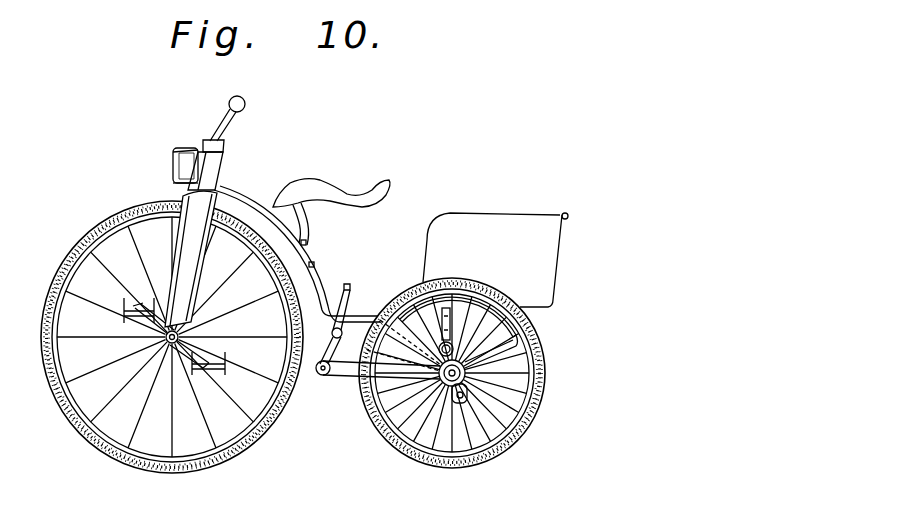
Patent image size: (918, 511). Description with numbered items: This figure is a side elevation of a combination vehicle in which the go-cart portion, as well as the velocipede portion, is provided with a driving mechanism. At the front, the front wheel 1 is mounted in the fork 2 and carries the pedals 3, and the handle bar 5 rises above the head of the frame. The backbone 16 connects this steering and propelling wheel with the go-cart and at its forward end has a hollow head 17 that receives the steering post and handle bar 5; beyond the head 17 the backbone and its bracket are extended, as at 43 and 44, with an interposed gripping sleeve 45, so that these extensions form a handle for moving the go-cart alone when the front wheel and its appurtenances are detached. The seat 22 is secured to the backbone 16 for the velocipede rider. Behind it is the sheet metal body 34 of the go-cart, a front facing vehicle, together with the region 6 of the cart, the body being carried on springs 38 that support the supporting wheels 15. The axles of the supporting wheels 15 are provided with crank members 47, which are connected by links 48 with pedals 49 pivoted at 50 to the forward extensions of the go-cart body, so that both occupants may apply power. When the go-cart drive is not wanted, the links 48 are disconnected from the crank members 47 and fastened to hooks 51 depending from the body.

The front wheel 1 is at (58, 280).
The fork 2 is at (191, 259).
The pedals 3 is at (124, 305).
The handle bar 5 is at (220, 118).
The seat body 6 is at (588, 290).
The supporting wheels 15 is at (520, 436).
The backbone 16 is at (257, 206).
The hollow head 17 is at (210, 171).
The seat 22 is at (342, 194).
The body 34 is at (535, 262).
The springs 38 is at (517, 341).
The backbone extension 43 is at (174, 186).
The bracket extension 44 is at (186, 150).
The gripping sleeve 45 is at (173, 164).
The crank members 47 is at (463, 397).
The links 48 is at (356, 378).
The pedals 49 is at (337, 351).
The pivot 50 is at (341, 334).
The hooks 51 is at (455, 325).